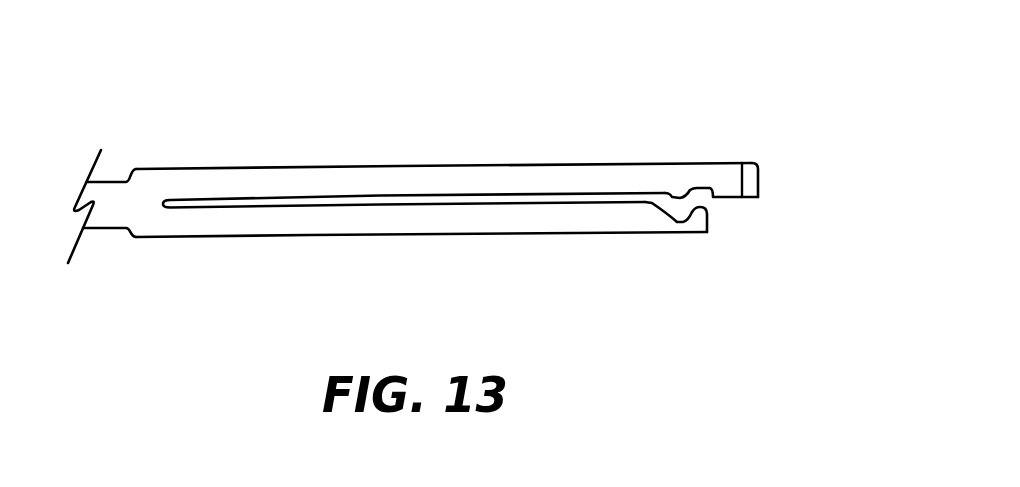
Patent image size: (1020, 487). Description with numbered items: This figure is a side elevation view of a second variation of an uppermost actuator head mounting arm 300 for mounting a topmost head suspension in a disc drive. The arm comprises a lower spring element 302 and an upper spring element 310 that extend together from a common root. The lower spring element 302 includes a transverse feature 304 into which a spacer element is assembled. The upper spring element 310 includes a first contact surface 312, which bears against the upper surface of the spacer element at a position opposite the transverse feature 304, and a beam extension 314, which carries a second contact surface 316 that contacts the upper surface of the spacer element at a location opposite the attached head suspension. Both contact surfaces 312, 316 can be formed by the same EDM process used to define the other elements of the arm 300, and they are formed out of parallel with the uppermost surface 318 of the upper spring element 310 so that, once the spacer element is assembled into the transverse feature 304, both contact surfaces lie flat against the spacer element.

The uppermost actuator head mounting arm 300 is at (276, 96).
The lower spring element 302 is at (428, 223).
The transverse feature 304 is at (655, 237).
The upper spring element 310 is at (409, 175).
The first contact surface 312 is at (672, 197).
The beam extension 314 is at (750, 179).
The second contact surface 316 is at (742, 163).
The uppermost surface 318 is at (543, 162).